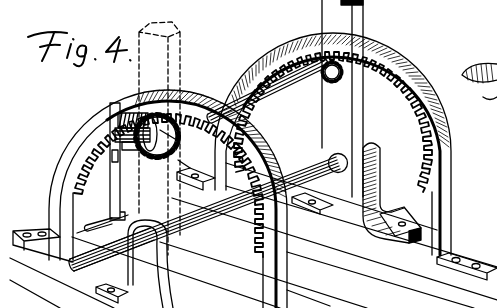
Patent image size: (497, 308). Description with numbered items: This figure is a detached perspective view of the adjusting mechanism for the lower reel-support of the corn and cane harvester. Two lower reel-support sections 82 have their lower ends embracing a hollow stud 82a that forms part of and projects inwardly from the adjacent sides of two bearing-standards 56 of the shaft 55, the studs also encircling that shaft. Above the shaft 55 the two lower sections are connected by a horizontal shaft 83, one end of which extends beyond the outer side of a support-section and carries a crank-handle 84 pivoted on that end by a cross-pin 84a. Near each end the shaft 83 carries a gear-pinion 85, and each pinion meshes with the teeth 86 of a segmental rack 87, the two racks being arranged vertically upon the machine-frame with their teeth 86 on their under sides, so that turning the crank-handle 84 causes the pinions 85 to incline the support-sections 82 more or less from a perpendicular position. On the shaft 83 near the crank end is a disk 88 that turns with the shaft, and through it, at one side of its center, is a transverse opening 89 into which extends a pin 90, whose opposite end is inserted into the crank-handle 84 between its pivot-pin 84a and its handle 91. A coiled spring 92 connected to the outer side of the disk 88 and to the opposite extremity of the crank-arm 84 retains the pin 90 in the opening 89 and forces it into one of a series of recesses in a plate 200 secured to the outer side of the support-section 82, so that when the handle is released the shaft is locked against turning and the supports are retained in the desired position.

The shaft 55 is at (71, 269).
The bearing-standards 56 is at (381, 187).
The lower sections of reel-support 82 is at (330, 15).
The hollow stud 82a is at (330, 158).
The horizontal shaft 83 is at (284, 90).
The crank-handle 84 is at (110, 206).
The cross-pin 84a is at (120, 163).
The gear-pinion 85 is at (331, 81).
The teeth 86 is at (398, 101).
The segmental rack 87 is at (456, 153).
The disk 88 is at (170, 149).
The transverse opening 89 is at (149, 150).
The pin 90 is at (133, 152).
The handle 91 is at (104, 229).
The coiled spring 92 is at (133, 112).
The plate 200 is at (184, 170).